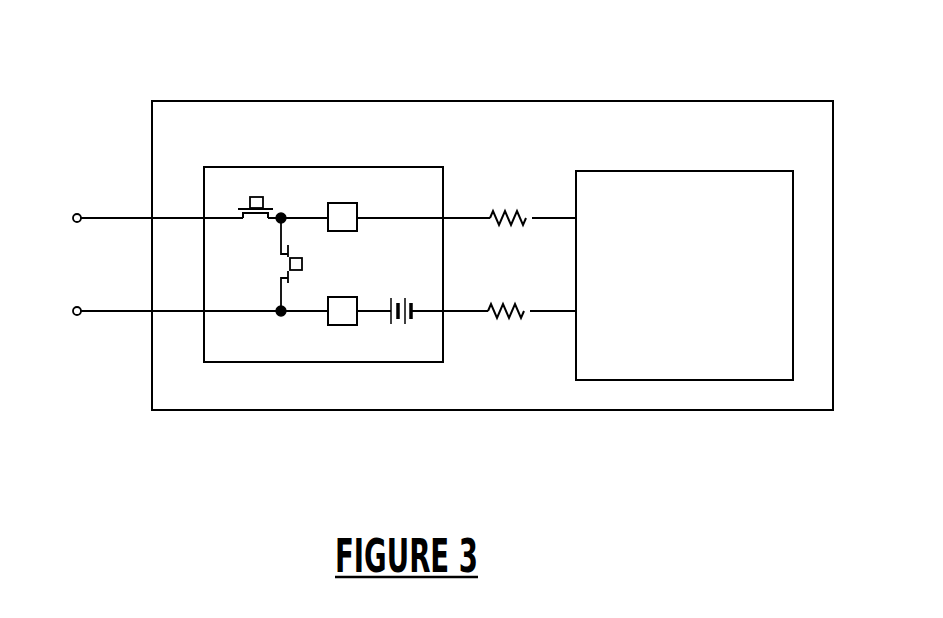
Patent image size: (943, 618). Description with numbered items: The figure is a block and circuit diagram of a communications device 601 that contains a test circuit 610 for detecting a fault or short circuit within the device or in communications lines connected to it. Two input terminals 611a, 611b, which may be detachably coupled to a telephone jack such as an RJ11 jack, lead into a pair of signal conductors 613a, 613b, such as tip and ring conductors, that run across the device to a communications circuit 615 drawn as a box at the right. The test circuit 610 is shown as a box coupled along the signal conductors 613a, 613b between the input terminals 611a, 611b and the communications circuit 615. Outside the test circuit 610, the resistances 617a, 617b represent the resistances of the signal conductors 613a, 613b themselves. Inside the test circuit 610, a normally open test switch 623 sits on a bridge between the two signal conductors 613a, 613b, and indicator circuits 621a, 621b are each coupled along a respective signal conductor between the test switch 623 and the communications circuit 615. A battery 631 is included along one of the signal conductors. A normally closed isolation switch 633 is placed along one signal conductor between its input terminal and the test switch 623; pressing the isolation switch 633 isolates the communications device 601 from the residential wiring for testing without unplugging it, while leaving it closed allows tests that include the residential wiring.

The communications device 601 is at (532, 101).
The test circuit 610 is at (268, 363).
The input terminal 611a is at (73, 312).
The input terminal 611b is at (73, 219).
The signal conductor 613a is at (463, 312).
The signal conductor 613b is at (113, 217).
The communications circuit 615 is at (685, 381).
The resistance 617a is at (503, 320).
The resistance 617b is at (497, 210).
The indicator circuit 621a is at (338, 326).
The indicator circuit 621b is at (340, 203).
The test switch 623 is at (303, 258).
The battery 631 is at (412, 319).
The isolation switch 633 is at (257, 197).